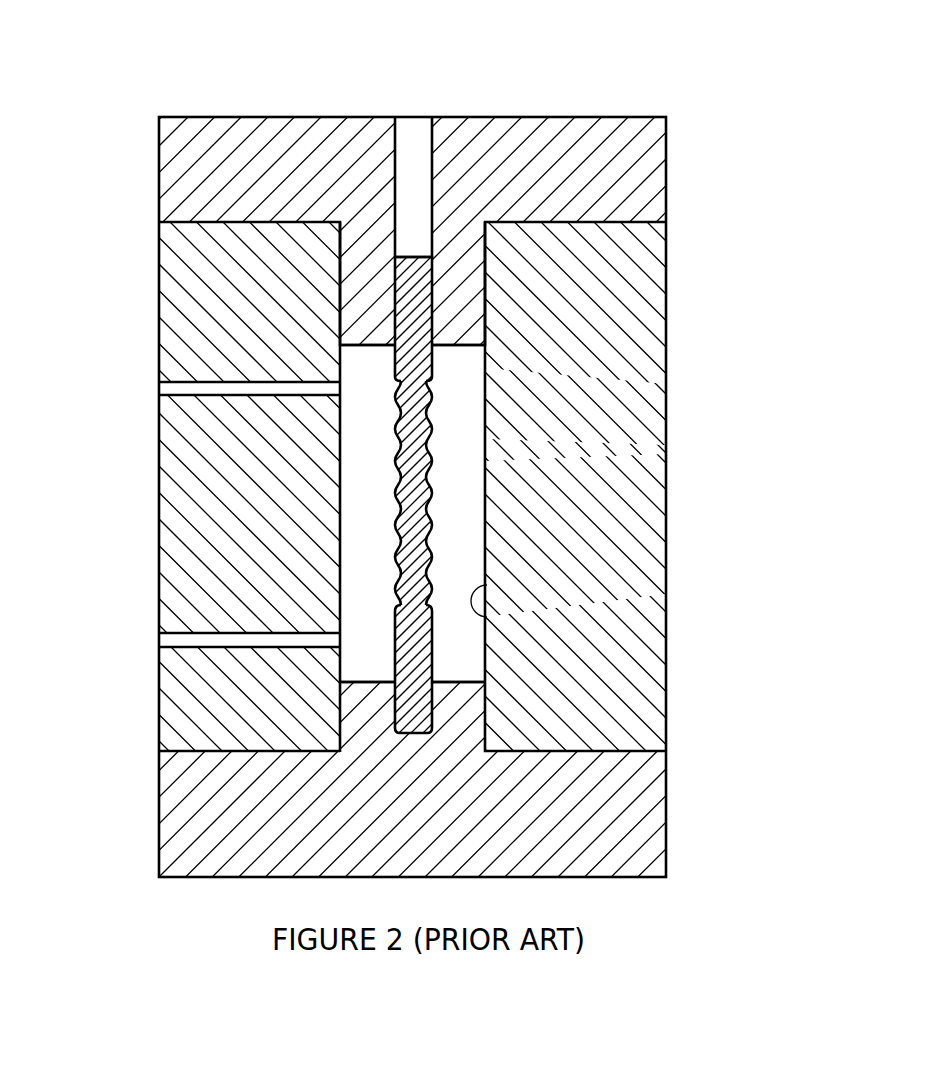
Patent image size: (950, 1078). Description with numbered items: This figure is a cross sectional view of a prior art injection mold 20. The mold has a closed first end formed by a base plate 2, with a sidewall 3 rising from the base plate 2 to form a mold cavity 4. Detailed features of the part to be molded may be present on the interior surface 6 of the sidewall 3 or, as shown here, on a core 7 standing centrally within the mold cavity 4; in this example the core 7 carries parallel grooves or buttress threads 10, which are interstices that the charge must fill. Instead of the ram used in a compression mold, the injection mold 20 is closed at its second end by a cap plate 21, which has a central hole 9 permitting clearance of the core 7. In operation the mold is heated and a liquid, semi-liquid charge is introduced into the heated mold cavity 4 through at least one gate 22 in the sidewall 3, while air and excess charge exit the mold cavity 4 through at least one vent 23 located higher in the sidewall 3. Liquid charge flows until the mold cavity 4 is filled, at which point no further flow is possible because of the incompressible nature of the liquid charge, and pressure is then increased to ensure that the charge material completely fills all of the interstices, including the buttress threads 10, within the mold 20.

The injection mold 20 is at (142, 100).
The cap plate 21 is at (159, 171).
The base plate 2 is at (666, 802).
The sidewall 3 is at (666, 537).
The mold cavity 4 is at (470, 520).
The interior surface 6 is at (487, 617).
The core 7 is at (432, 363).
The central hole 9 is at (420, 179).
The buttress threads 10 is at (432, 437).
The gate 22 is at (175, 653).
The vent 23 is at (172, 403).